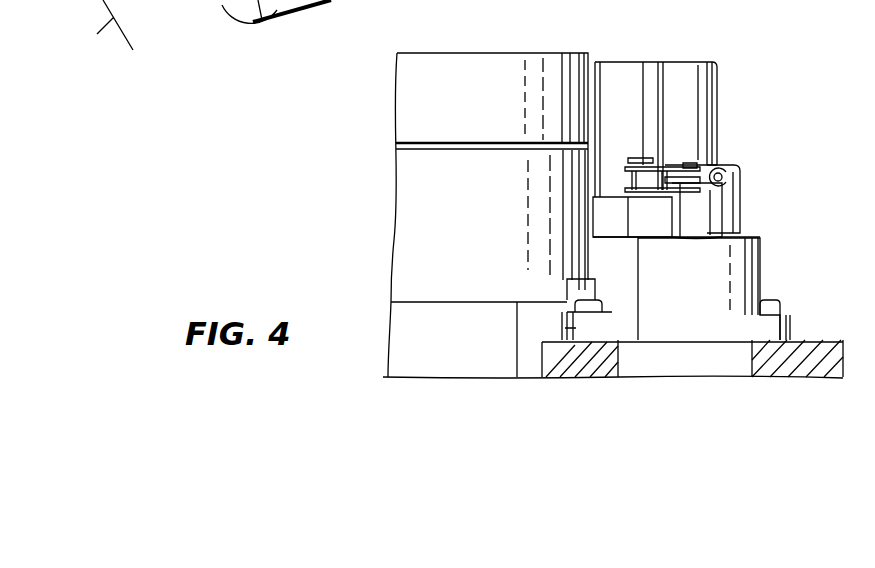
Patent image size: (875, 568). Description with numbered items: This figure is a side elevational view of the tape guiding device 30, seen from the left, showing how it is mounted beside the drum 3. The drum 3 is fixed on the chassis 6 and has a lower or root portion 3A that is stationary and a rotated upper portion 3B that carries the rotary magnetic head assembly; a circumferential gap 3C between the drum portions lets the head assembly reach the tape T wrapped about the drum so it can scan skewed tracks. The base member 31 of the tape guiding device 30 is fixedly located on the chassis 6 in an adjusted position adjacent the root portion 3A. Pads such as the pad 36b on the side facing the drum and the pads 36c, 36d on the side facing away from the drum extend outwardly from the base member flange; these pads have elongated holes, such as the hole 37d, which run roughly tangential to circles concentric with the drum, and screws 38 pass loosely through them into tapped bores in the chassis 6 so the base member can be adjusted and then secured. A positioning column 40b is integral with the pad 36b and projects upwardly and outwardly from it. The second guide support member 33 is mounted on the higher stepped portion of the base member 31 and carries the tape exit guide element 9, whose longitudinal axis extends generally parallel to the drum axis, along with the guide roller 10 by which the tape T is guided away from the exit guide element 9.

The drum 3 is at (440, 45).
The lower or root portion of drum 3A is at (410, 248).
The rotated upper portion of drum 3B is at (412, 108).
The circumferential gap 3C is at (462, 150).
The tape exit guide element 9 is at (598, 97).
The guide roller 10 is at (706, 90).
The tape guiding device 30 is at (766, 152).
The base member 31 is at (760, 248).
The second guide support member 33 is at (617, 207).
The pad 36b is at (568, 328).
The pad 36c is at (787, 317).
The pad 36d is at (309, 6).
The hole 37d is at (247, 15).
The screw 38 is at (262, 20).
The positioning column 40b is at (573, 290).
The chassis 6 is at (828, 345).
The tape T is at (109, 31).